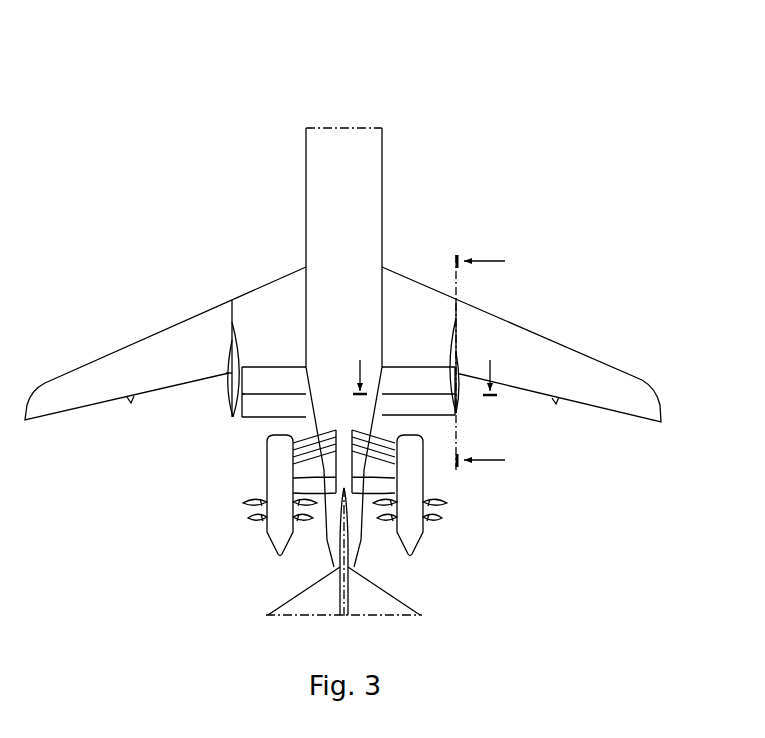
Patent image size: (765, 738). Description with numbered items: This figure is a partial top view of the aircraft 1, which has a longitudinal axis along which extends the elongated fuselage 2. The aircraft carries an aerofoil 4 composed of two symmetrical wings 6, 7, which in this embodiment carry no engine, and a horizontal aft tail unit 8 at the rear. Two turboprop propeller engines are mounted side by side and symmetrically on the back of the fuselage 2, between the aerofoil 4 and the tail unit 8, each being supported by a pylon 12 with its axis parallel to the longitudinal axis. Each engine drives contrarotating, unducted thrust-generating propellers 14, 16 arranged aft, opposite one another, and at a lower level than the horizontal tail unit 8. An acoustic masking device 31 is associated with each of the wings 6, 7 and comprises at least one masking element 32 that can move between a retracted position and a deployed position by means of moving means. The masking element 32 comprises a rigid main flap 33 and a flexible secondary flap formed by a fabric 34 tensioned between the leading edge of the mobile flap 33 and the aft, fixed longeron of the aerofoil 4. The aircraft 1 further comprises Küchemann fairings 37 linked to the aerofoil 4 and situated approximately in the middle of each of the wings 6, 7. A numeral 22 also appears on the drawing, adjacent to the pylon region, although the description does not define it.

The aircraft 1 is at (229, 79).
The fuselage 2 is at (394, 192).
The aerofoil 4 is at (255, 476).
The wing 6 is at (577, 355).
The wing 7 is at (157, 340).
The horizontal aft tail unit 8 is at (296, 599).
The pylon 12 is at (383, 443).
The propeller 14 is at (437, 522).
The propeller 16 is at (442, 505).
The attachment pylon 22 is at (267, 423).
The acoustic masking device 31 is at (222, 420).
The masking element 32 is at (434, 428).
The rigid main flap 33 is at (240, 414).
The fabric 34 is at (272, 383).
The fairing 37 is at (224, 402).